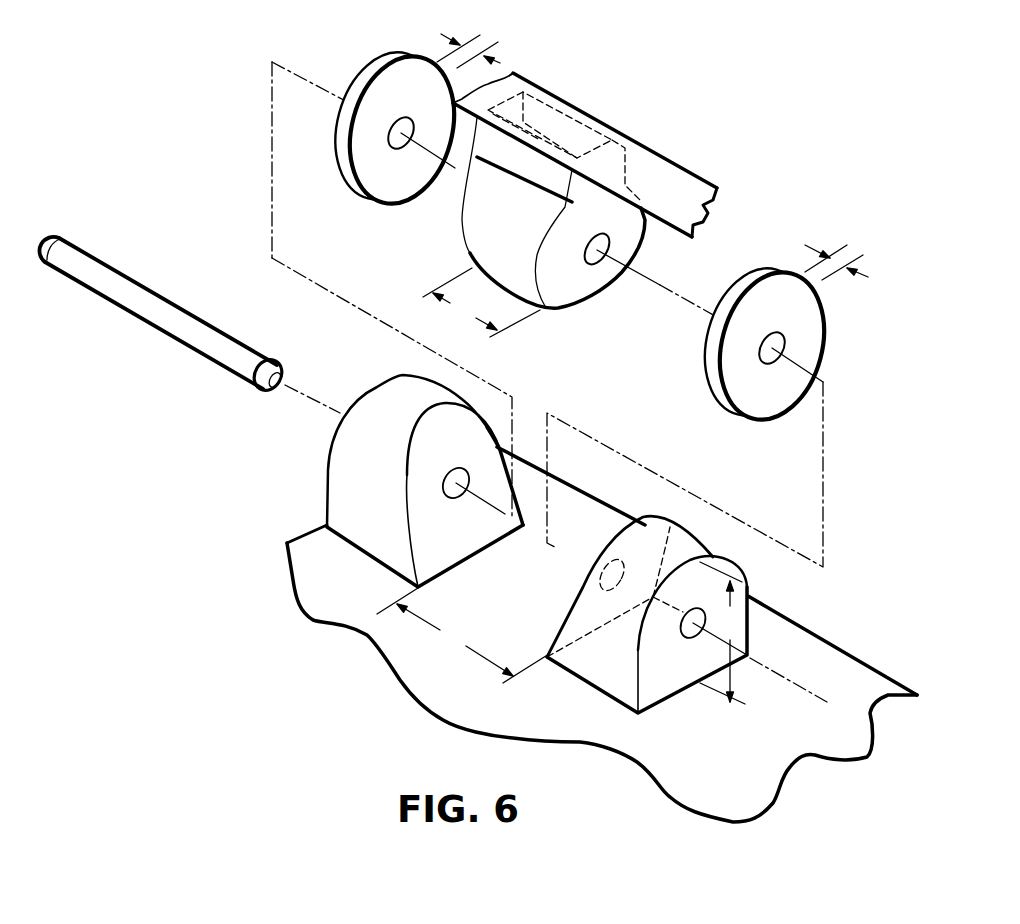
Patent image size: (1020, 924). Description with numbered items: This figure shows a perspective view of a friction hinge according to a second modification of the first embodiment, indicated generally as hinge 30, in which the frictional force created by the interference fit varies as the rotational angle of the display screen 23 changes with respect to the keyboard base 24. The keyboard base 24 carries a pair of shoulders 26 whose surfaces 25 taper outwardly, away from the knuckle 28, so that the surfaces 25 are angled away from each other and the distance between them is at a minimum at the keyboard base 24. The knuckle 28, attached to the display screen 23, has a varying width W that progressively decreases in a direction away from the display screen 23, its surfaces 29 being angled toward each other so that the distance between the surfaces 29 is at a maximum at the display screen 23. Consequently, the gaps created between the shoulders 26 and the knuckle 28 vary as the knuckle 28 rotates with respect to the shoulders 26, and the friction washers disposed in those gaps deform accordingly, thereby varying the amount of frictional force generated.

The display screen 23 is at (680, 188).
The keyboard base 24 is at (795, 653).
The surfaces of shoulders 25 is at (473, 533).
The shoulders 26 is at (547, 657).
The knuckle 28 is at (477, 250).
The surfaces of knuckle 29 is at (558, 242).
The hinge assembly 30 is at (855, 200).